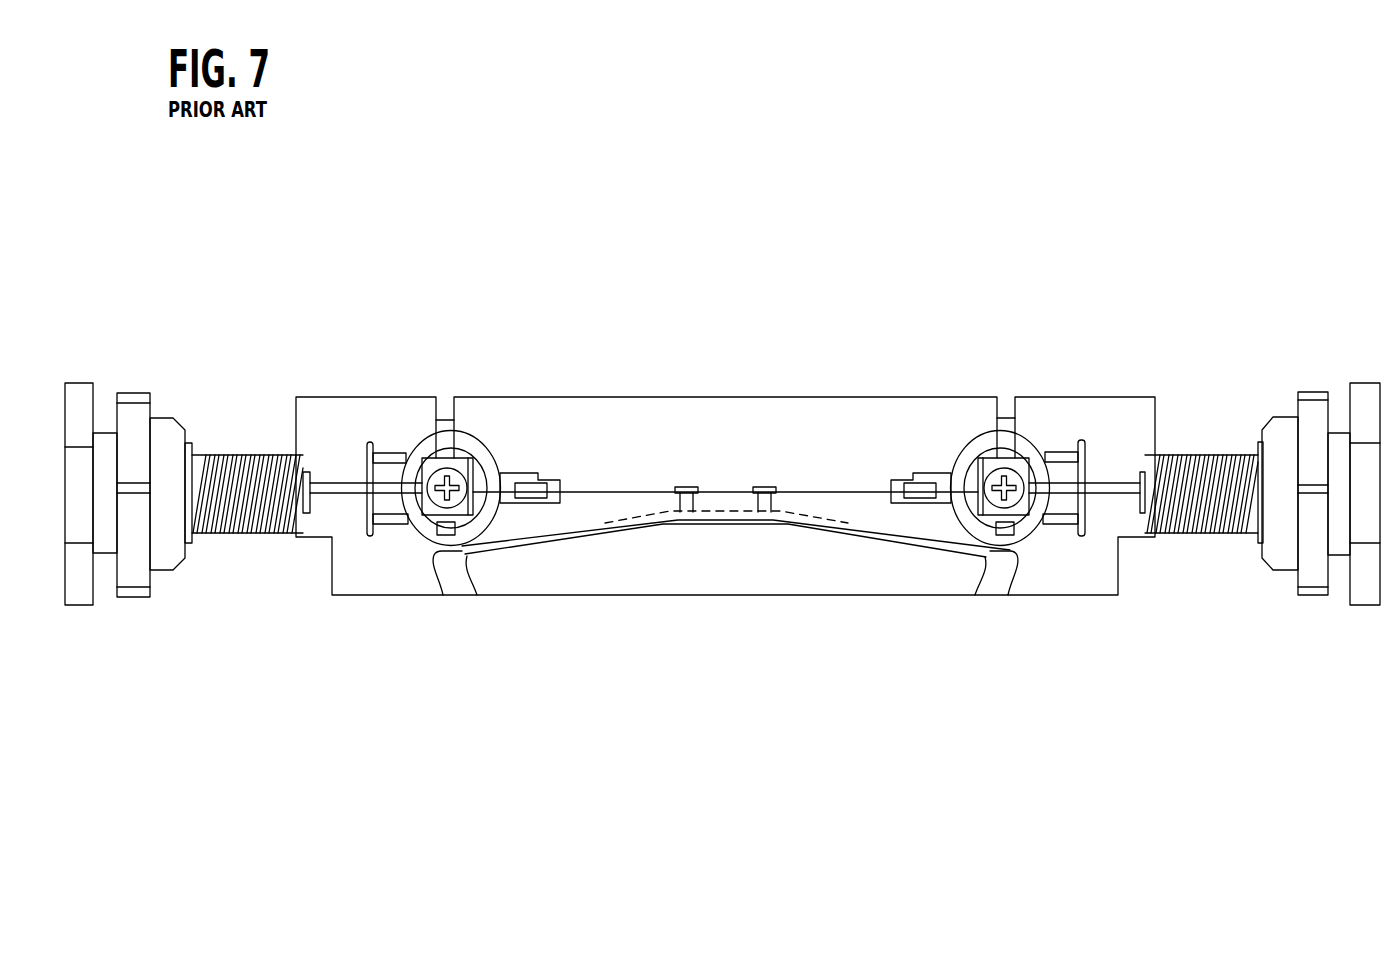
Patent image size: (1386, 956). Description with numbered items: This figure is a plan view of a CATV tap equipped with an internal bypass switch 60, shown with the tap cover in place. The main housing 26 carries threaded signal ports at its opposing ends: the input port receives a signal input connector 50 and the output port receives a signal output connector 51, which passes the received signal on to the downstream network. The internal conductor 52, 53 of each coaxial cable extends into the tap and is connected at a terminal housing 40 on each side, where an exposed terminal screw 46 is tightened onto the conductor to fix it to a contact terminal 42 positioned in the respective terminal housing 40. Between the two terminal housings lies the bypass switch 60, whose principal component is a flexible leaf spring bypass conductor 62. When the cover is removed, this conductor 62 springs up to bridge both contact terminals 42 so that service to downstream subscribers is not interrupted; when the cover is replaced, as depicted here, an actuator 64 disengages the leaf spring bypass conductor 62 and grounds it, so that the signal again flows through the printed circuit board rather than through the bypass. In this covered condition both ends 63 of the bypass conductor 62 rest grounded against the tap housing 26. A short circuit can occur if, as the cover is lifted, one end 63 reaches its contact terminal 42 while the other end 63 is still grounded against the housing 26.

The main housing 26 is at (314, 397).
The terminal housing 40 is at (403, 536).
The contact terminal 42 is at (430, 463).
The terminal screw 46 is at (460, 466).
The signal input connector 50 is at (1206, 456).
The signal output connector 51 is at (225, 453).
The internal conductor 52 is at (1112, 482).
The internal conductor 53 is at (334, 482).
The bypass switch 60 is at (727, 478).
The leaf spring bypass conductor 62 is at (604, 552).
The ends of the bypass conductor 63 is at (457, 583).
The actuator 64 is at (574, 522).